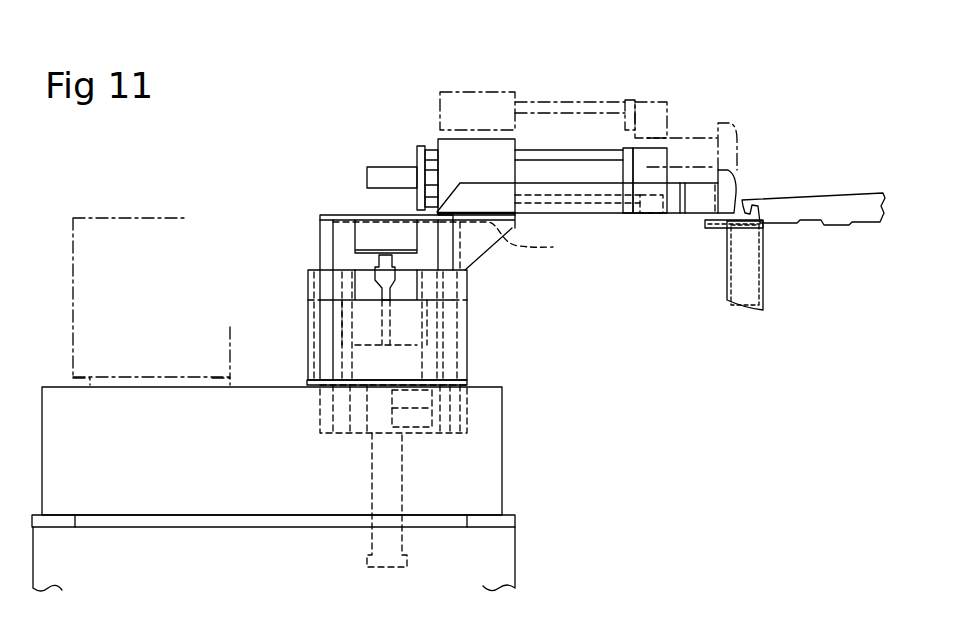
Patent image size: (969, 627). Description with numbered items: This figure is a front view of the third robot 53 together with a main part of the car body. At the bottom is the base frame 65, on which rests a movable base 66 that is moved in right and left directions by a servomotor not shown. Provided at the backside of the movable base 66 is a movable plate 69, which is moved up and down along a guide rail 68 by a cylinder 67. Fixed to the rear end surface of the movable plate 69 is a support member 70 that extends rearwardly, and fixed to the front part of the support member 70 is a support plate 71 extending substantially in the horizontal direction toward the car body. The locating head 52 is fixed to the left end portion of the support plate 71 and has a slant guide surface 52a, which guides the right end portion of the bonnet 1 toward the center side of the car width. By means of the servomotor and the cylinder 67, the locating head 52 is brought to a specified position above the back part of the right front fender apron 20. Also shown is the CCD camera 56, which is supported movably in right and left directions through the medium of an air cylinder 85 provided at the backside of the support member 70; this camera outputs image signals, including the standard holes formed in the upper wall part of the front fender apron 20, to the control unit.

The bonnet 1 is at (848, 197).
The front fender apron 20 is at (763, 277).
The locating head 52 is at (713, 228).
The slant guide surface 52a is at (731, 176).
The third robot 53 is at (220, 203).
The CCD camera 56 is at (643, 148).
The base frame 65 is at (273, 387).
The movable base 66 is at (310, 303).
The cylinder 67 is at (403, 463).
The guide rail 68 is at (443, 277).
The movable plate 69 is at (430, 245).
The support member 70 is at (517, 242).
The support plate 71 is at (620, 214).
The air cylinder 85 is at (387, 167).